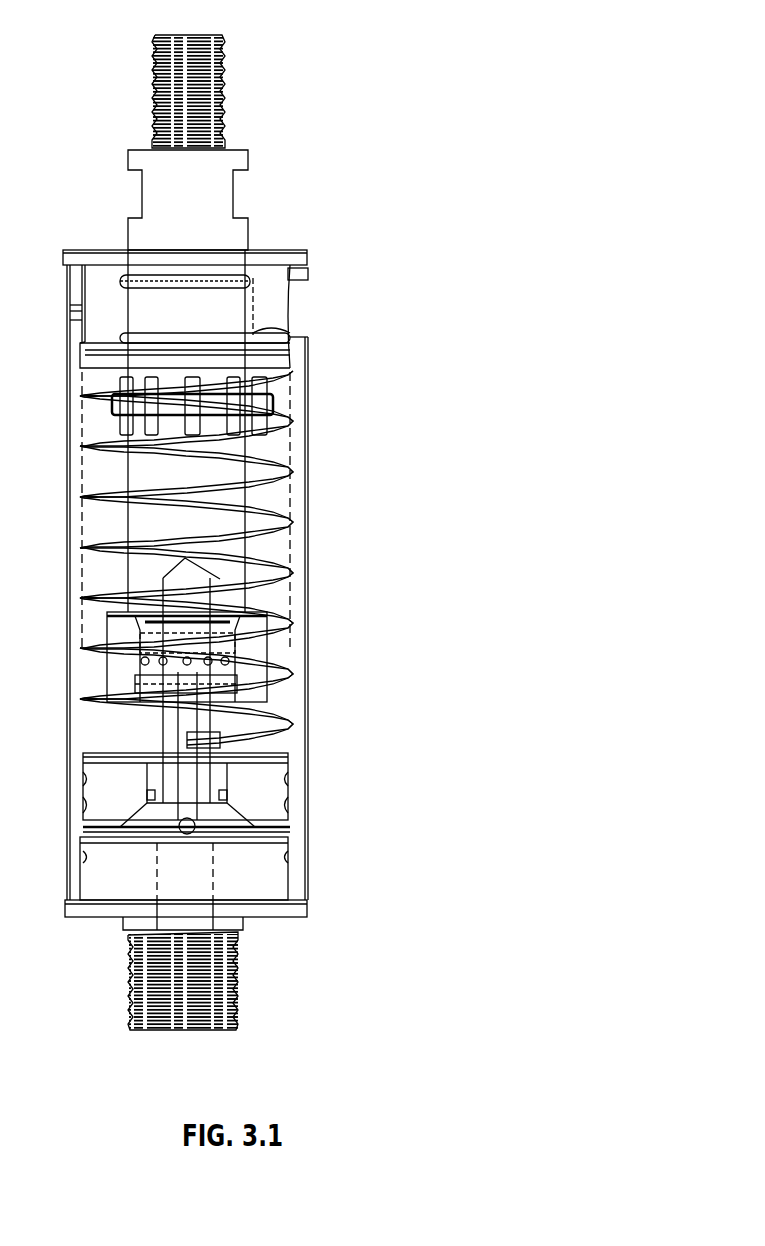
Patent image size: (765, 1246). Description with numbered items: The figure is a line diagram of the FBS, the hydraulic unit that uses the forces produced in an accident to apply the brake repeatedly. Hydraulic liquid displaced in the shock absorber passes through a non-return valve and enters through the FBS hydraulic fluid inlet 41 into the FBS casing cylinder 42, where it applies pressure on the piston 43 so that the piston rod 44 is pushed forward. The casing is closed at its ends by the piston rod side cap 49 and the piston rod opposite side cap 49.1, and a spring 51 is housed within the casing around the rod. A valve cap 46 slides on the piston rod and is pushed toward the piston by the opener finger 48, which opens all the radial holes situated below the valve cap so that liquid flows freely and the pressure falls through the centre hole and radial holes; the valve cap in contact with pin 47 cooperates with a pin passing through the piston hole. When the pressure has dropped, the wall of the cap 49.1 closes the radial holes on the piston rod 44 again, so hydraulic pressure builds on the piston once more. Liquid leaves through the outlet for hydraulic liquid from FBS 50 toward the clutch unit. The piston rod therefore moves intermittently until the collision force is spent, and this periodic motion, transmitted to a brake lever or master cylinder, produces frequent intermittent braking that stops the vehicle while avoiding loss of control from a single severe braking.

The FBS hydraulic fluid inlet 41 is at (211, 680).
The FBS casing cylinder 42 is at (358, 500).
The piston 43 is at (330, 796).
The piston rod 44 is at (275, 193).
The valve cap 46 is at (318, 655).
The valve cap in contact with pin 47 is at (245, 733).
The opener finger of valve cap 48 is at (328, 394).
The piston rod side cap 49 is at (348, 260).
The piston rod opposite side cap 49.1 is at (327, 878).
The outlet for hydraulic liquid from FBS 50 is at (358, 313).
The spring 51 is at (337, 580).